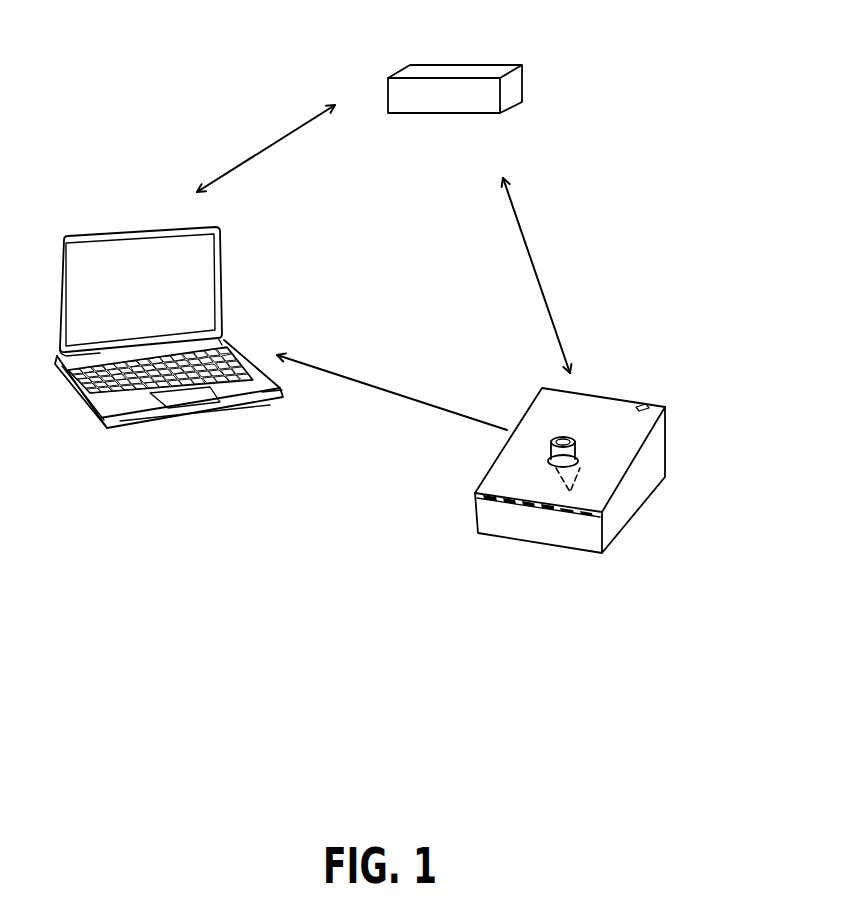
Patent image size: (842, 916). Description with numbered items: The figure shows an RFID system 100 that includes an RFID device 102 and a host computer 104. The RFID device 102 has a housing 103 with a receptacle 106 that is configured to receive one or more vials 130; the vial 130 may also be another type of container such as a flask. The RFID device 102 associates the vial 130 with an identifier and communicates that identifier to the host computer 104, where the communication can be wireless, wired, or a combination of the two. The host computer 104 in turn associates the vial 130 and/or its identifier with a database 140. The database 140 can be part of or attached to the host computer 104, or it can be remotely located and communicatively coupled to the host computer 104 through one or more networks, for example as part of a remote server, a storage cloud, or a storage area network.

The RFID system 100 is at (609, 208).
The RFID device 102 is at (615, 443).
The housing 103 is at (609, 408).
The host computer 104 is at (274, 274).
The receptacle 106 is at (578, 458).
The vial 130 is at (562, 436).
The database 140 is at (458, 72).